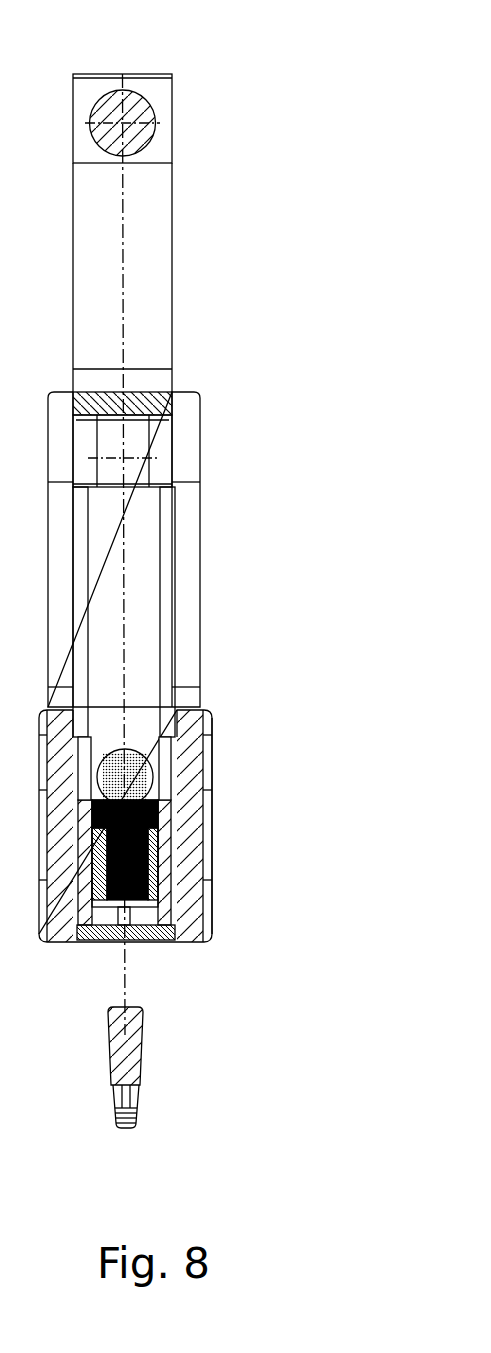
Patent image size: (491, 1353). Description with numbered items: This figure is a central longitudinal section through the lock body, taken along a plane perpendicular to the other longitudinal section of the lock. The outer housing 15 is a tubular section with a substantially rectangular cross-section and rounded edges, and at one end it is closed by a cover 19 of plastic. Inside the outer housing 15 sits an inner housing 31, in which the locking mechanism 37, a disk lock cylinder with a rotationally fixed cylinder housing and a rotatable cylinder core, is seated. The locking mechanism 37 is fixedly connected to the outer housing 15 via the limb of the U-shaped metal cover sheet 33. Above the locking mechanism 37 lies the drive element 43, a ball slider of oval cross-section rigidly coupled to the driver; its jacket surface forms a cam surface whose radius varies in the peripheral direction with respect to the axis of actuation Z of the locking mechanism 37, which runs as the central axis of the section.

The outer housing 15 is at (188, 782).
The cover 19 is at (205, 920).
The inner housing 31 is at (165, 838).
The U-shaped metal cover sheet 33 is at (160, 935).
The locking mechanism 37 is at (160, 872).
The drive element 43 is at (125, 768).
The axis of actuation Z is at (122, 970).